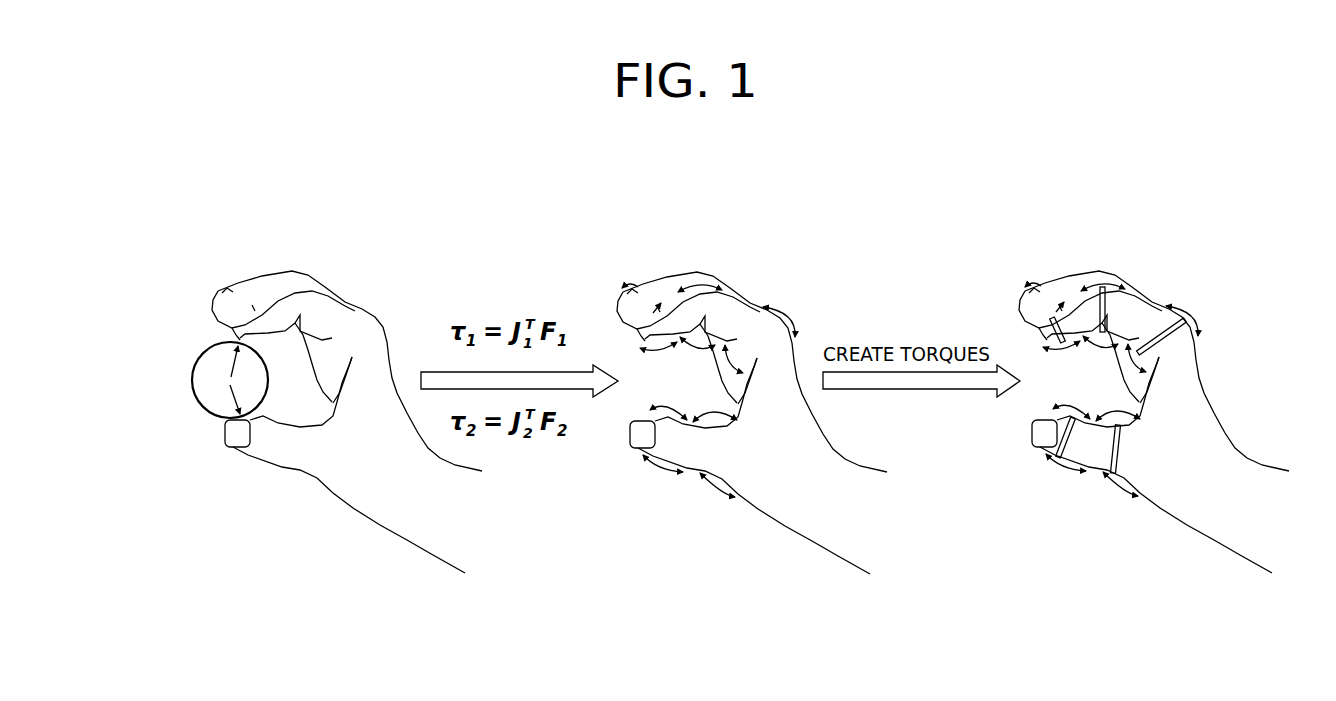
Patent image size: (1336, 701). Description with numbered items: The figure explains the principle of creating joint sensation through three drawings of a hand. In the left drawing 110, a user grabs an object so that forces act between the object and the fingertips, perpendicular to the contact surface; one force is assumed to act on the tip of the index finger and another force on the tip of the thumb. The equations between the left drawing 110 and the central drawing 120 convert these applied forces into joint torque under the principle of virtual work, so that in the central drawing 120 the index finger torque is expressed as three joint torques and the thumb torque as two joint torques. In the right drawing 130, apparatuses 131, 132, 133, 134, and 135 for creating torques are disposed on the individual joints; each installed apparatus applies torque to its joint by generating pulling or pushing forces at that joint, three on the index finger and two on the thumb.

The left drawing 110 is at (240, 243).
The central drawing 120 is at (645, 243).
The right drawing 130 is at (1047, 243).
The apparatus for creating torque 131 is at (1036, 328).
The apparatus for creating torque 132 is at (1128, 291).
The apparatus for creating torque 133 is at (1194, 341).
The apparatus for creating torque 134 is at (1046, 453).
The apparatus for creating torque 135 is at (1104, 474).